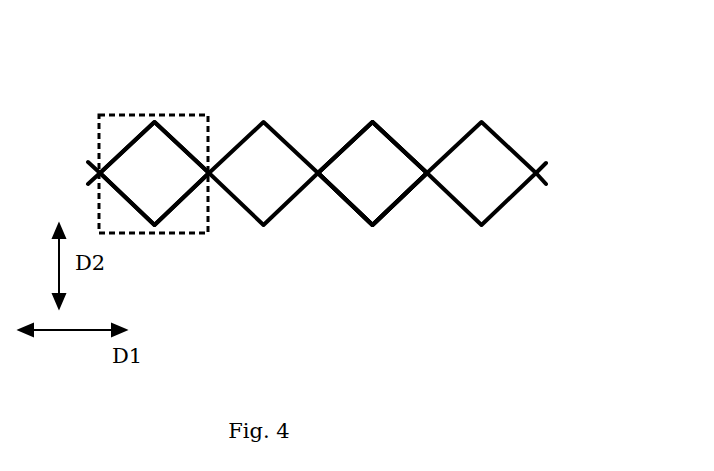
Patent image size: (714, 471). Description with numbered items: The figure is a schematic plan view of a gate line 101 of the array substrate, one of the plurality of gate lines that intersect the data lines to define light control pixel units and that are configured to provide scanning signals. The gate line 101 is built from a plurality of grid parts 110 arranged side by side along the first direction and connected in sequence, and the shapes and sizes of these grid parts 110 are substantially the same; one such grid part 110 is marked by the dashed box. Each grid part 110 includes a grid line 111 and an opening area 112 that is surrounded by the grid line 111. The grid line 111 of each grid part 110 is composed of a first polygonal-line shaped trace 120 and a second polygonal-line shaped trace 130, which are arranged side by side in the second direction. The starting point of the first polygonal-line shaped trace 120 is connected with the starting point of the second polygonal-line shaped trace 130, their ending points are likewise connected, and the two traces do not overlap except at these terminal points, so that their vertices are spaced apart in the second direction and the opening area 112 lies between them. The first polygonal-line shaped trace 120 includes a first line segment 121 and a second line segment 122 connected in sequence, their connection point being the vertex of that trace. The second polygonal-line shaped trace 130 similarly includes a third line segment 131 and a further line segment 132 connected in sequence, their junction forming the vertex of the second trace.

The gate line 101 is at (476, 40).
The grid part 110 is at (121, 128).
The grid line 111 is at (171, 135).
The opening area 112 is at (188, 167).
The first polygonal-line shaped trace 120 is at (329, 65).
The first line segment 121 is at (341, 150).
The second line segment 122 is at (399, 150).
The second polygonal-line shaped trace 130 is at (402, 293).
The third line segment 131 is at (343, 200).
The second lower segment 132 is at (398, 202).